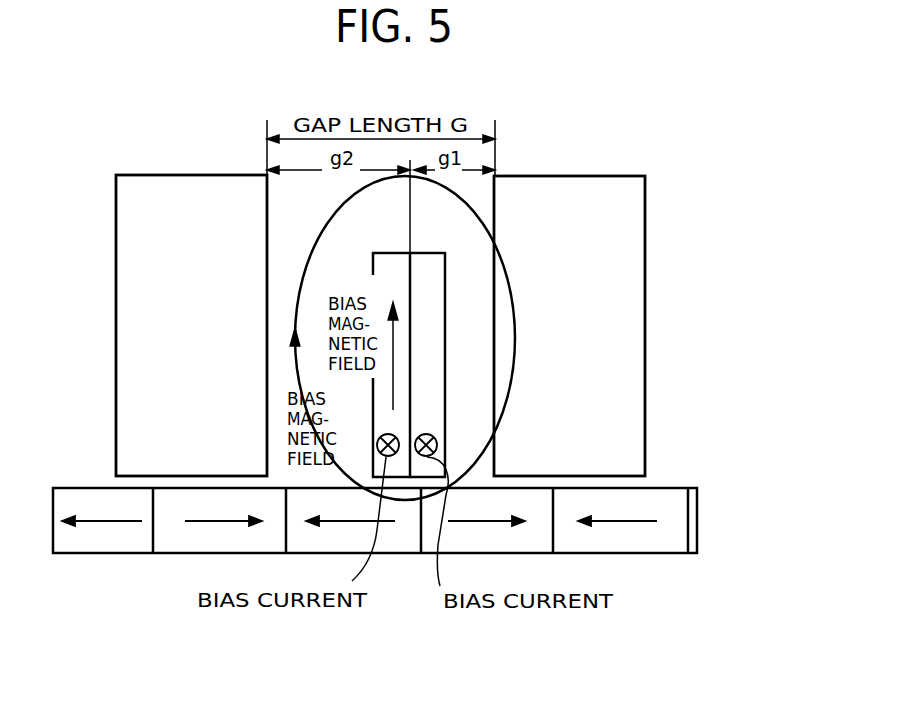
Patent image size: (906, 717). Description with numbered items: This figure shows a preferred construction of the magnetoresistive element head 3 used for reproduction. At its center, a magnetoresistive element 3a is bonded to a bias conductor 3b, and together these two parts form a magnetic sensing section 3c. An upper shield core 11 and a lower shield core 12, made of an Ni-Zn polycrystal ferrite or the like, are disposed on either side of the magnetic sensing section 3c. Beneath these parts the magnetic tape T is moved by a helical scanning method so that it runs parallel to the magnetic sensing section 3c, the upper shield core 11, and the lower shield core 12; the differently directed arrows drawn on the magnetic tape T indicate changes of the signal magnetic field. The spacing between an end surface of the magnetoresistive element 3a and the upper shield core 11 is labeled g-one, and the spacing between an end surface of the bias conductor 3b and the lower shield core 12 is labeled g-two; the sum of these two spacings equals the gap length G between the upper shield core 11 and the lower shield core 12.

The magnetoresistive element head 3 is at (582, 318).
The magnetoresistive element 3a is at (387, 283).
The bias conductor 3b is at (425, 268).
The magnetic sensing section 3c is at (563, 351).
The upper shield core 11 is at (568, 176).
The lower shield core 12 is at (190, 175).
The magnetic tape T is at (645, 555).